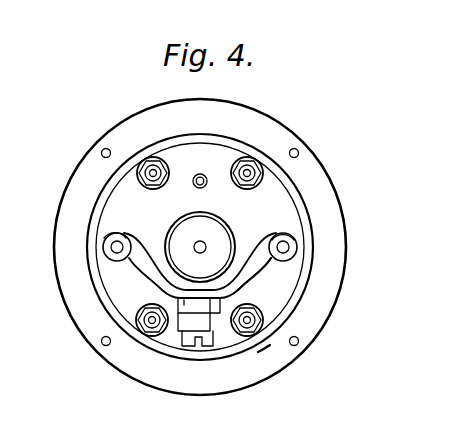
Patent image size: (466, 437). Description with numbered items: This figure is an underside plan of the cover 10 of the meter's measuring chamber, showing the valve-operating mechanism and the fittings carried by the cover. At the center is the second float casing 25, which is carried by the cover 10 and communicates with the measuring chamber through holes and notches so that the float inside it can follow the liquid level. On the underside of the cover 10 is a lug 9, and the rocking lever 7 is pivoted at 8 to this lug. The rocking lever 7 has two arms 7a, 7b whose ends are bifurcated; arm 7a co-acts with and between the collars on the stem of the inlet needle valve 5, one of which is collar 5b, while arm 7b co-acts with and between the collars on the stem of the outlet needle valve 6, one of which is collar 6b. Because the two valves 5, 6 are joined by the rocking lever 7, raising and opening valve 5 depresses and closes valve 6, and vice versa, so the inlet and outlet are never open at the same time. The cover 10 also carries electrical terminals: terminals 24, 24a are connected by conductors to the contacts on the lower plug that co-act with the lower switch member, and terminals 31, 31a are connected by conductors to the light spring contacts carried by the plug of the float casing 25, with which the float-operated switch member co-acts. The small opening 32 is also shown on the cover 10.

The needle valve 5 is at (103, 247).
The collar 5b is at (114, 233).
The needle valve 6 is at (297, 248).
The collar 6b is at (286, 233).
The rocking lever 7 is at (214, 332).
The arm of rocking lever 7a is at (104, 308).
The arm of rocking lever 7b is at (274, 279).
The pivot 8 is at (188, 346).
The lug 9 is at (230, 326).
The cover 10 is at (58, 279).
The terminal 24 is at (143, 337).
The terminal 24a is at (255, 166).
The second float casing 25 is at (170, 228).
The terminal 31 is at (140, 175).
The terminal 31a is at (258, 352).
The small hole 32 is at (201, 188).